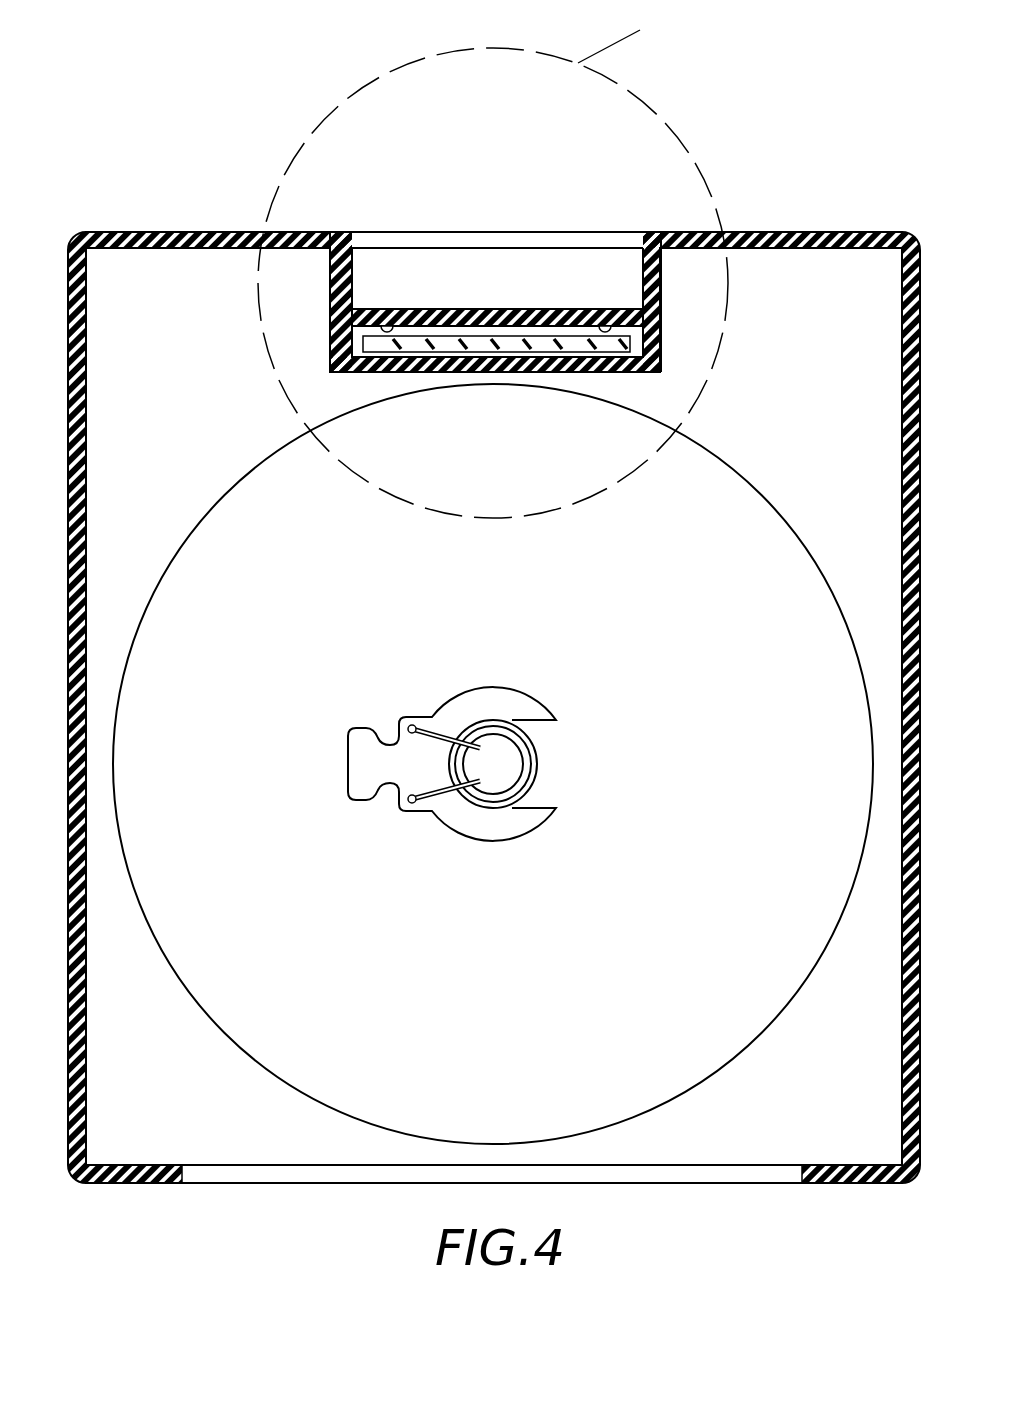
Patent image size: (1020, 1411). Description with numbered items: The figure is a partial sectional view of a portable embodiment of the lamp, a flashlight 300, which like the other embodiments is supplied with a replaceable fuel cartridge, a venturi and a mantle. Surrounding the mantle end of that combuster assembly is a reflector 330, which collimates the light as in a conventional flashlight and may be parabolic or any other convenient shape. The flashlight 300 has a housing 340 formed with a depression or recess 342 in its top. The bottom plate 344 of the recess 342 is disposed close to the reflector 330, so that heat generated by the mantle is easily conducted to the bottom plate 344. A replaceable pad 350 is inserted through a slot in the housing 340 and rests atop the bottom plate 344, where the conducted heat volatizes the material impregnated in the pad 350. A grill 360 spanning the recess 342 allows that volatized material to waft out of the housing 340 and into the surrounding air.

The flashlight 300 is at (491, 642).
The reflector 330 is at (668, 1062).
The housing 340 is at (846, 232).
The recess 342 is at (353, 258).
The bottom plate 344 is at (580, 360).
The replaceable pad 350 is at (456, 338).
The grill 360 is at (597, 232).